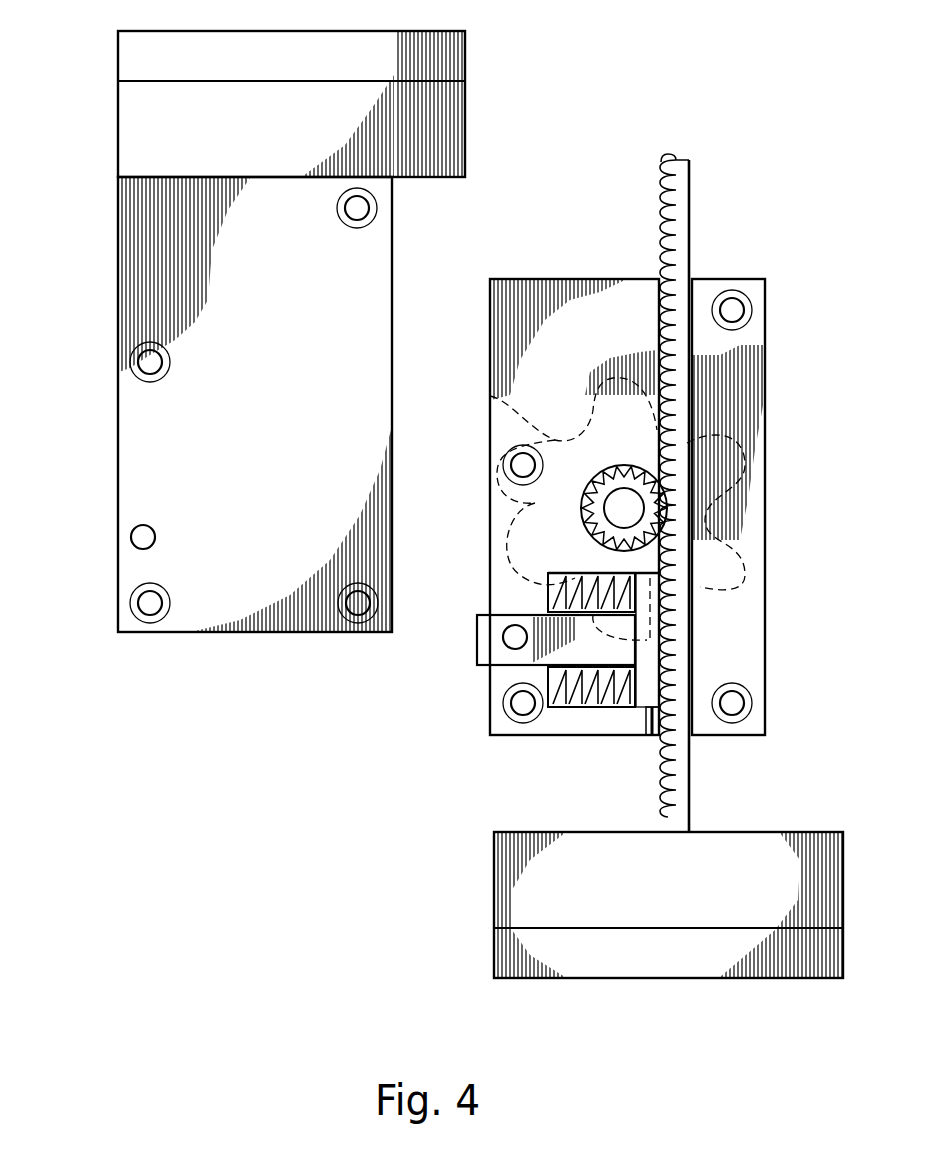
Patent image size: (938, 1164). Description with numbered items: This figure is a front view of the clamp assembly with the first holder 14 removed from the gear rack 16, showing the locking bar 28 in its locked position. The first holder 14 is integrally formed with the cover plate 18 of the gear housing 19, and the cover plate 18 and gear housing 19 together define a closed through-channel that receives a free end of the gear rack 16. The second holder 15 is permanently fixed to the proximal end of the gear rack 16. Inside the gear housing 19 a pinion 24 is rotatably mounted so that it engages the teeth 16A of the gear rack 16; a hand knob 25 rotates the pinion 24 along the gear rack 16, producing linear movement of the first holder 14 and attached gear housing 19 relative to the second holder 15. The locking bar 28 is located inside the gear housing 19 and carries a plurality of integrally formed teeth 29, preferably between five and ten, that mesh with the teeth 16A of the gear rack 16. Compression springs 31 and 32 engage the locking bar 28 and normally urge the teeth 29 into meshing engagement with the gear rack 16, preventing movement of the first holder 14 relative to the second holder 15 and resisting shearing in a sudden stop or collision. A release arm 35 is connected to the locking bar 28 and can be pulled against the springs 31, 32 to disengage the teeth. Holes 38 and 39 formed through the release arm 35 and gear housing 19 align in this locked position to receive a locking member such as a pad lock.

The first holder 14 is at (135, 164).
The second holder 15 is at (760, 853).
The gear rack 16 is at (680, 255).
The teeth of the gear rack 16A is at (661, 222).
The cover plate 18 is at (148, 452).
The gear housing 19 is at (745, 360).
The pinion 24 is at (585, 510).
The hand knob 25 is at (490, 394).
The locking bar 28 is at (647, 693).
The teeth of the locking bar 29 is at (650, 640).
The compression spring 31 is at (548, 600).
The compression spring 32 is at (570, 708).
The release arm 35 is at (487, 655).
The hole in release arm 38 is at (503, 635).
The hole in gear housing 39 is at (130, 540).